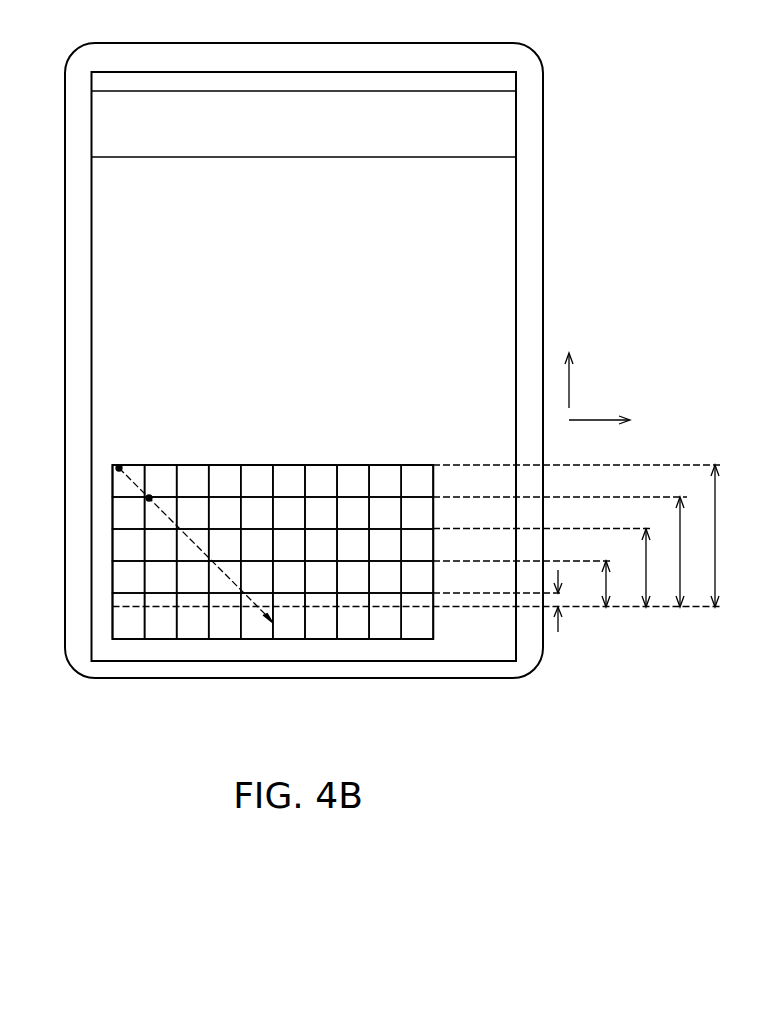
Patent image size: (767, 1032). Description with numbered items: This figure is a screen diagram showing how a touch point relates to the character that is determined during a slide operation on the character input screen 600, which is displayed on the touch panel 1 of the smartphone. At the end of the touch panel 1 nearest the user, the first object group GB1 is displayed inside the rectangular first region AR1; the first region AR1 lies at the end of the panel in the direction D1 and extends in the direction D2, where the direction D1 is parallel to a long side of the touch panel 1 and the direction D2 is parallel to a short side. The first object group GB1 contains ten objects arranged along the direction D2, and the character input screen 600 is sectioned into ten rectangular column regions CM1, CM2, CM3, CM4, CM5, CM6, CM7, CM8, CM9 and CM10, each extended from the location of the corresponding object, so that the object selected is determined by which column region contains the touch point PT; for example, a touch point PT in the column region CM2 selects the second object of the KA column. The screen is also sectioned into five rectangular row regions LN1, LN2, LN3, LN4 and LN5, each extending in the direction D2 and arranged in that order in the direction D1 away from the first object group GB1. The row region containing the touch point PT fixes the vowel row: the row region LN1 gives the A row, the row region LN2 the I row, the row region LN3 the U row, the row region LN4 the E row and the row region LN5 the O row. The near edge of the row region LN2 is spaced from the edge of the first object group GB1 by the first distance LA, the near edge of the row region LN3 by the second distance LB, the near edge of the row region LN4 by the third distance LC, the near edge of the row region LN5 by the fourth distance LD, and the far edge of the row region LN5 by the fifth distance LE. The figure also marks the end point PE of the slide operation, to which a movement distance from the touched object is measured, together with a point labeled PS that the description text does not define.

The character input screen 600 is at (190, 664).
The touch panel 1 is at (304, 403).
The first region AR1 is at (507, 628).
The first object group GB1 is at (342, 519).
The row region LN1 is at (112, 622).
The row region LN2 is at (112, 577).
The row region LN3 is at (112, 545).
The row region LN4 is at (112, 513).
The row region LN5 is at (112, 481).
The column region CM1 is at (131, 465).
The column region CM2 is at (162, 465).
The column region CM3 is at (194, 465).
The column region CM4 is at (226, 465).
The column region CM5 is at (258, 465).
The column region CM6 is at (290, 465).
The column region CM7 is at (322, 465).
The column region CM8 is at (354, 465).
The column region CM9 is at (386, 465).
The column region CM10 is at (418, 465).
The end point PE is at (117, 466).
The touch point PT is at (147, 498).
The start point / stroke path PS is at (273, 626).
The direction D1 is at (584, 380).
The direction D2 is at (599, 435).
The first distance LA is at (418, 601).
The second distance LB is at (534, 584).
The third distance LC is at (554, 568).
The fourth distance LD is at (572, 552).
The fifth distance LE is at (589, 536).